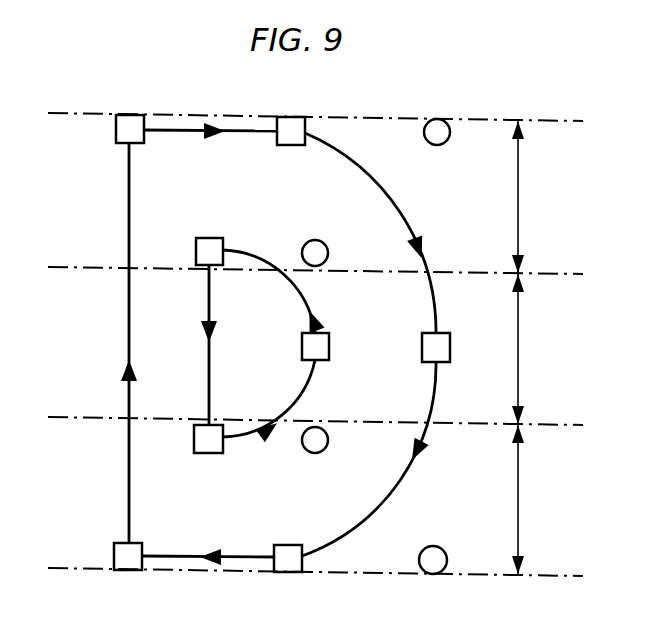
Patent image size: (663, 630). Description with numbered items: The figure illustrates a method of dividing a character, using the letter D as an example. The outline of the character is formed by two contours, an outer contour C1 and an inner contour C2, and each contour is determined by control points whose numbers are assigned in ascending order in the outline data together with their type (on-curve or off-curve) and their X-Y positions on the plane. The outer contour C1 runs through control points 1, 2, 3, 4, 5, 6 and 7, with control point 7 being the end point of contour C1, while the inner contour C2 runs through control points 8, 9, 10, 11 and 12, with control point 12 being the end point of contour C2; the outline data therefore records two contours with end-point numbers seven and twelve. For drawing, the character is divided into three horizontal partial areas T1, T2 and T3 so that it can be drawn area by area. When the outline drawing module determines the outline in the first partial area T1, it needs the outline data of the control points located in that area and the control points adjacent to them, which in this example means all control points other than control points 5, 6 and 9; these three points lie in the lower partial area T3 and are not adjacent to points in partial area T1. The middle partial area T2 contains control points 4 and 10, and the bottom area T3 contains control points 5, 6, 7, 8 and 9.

The control point 1 is at (130, 111).
The control point 2 is at (291, 114).
The control point 3 is at (437, 115).
The control point 4 is at (449, 348).
The control point 5 is at (433, 575).
The control point 6 is at (288, 576).
The control point 7 is at (128, 574).
The control point 8 is at (208, 451).
The control point 9 is at (327, 441).
The control point 10 is at (334, 347).
The control point 11 is at (329, 246).
The control point 12 is at (210, 236).
The contour C1 is at (129, 243).
The contour C2 is at (308, 307).
The partial area T1 is at (537, 197).
The partial area T2 is at (537, 349).
The partial area T3 is at (536, 499).